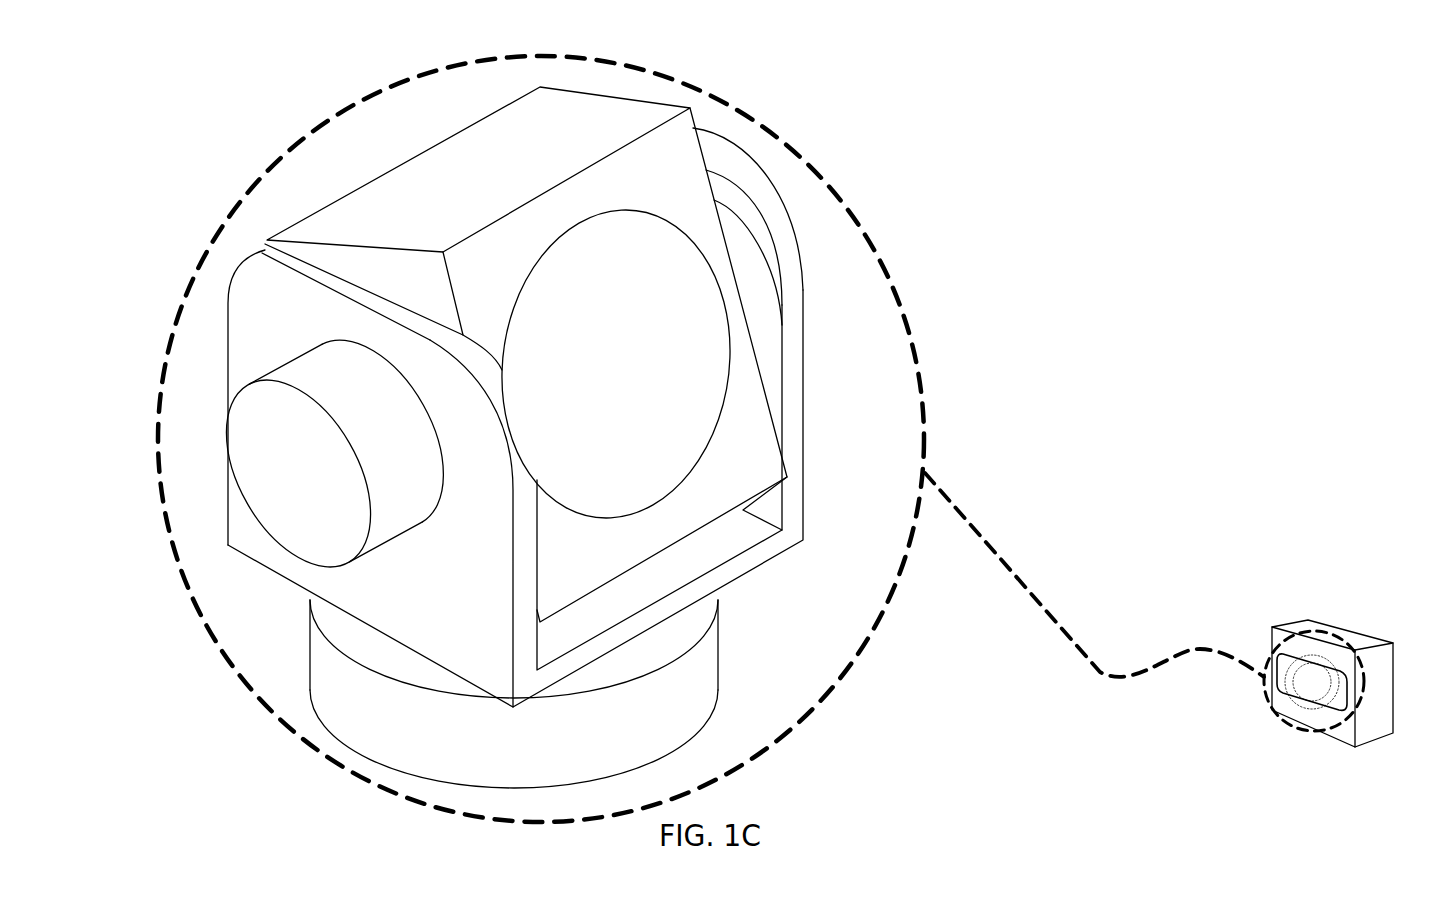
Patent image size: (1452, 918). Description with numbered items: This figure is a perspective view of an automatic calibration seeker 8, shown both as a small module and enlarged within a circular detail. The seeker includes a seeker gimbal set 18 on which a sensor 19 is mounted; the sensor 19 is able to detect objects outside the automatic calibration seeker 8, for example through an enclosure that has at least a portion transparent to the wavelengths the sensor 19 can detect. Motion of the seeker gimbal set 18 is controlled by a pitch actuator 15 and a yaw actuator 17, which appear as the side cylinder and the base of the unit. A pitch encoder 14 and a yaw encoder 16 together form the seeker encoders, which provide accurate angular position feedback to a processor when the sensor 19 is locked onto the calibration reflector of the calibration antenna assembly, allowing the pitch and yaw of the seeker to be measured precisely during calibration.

The automatic calibration seeker 8 is at (1380, 684).
The pitch encoder 14 is at (763, 183).
The pitch actuator 15 is at (298, 467).
The yaw encoder 16 is at (352, 633).
The yaw actuator 17 is at (653, 695).
The seeker gimbal set 18 is at (797, 412).
The sensor 19 is at (677, 345).